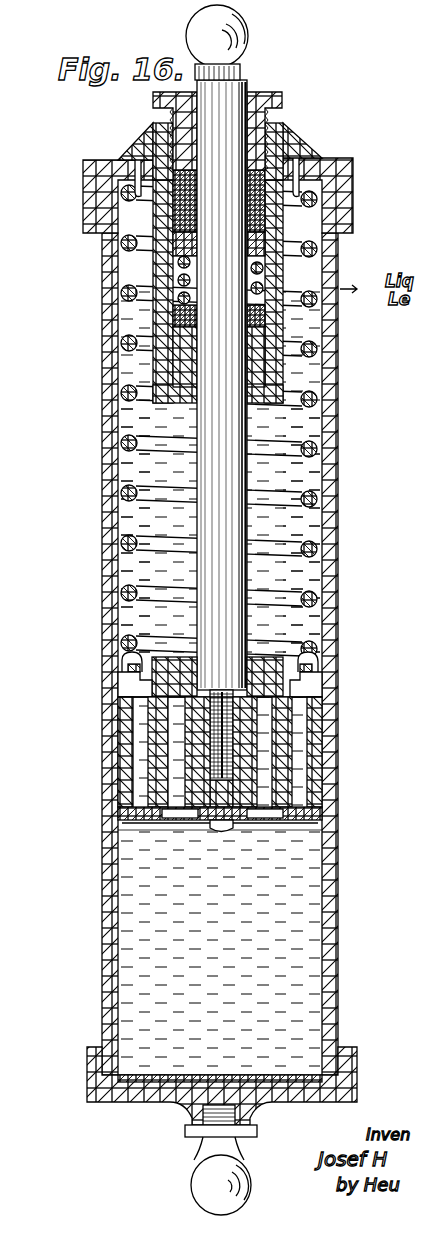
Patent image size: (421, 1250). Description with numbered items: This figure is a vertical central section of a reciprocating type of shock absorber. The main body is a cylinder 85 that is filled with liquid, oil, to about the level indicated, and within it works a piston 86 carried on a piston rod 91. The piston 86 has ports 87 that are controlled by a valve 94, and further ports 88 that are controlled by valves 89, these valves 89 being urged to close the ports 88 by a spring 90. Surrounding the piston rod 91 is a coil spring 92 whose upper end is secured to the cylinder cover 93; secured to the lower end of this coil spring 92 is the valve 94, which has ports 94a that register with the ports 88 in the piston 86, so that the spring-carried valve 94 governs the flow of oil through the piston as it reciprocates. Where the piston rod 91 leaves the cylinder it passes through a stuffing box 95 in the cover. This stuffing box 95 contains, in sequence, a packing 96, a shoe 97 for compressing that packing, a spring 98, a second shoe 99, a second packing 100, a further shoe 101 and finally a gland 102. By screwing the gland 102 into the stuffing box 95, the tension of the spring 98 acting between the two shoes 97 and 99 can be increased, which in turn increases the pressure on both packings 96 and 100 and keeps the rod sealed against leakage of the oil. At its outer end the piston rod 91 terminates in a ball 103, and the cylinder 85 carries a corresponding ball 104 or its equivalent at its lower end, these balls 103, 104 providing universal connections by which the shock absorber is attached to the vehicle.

The cylinder 85 is at (327, 935).
The piston 86 is at (318, 755).
The ports 87 is at (150, 763).
The ports 88 is at (140, 790).
The valves 89 is at (127, 815).
The spring 90 is at (273, 827).
The piston rod 91 is at (224, 585).
The coil spring 92 is at (293, 543).
The cylinder cover 93 is at (343, 194).
The valve 94 is at (120, 660).
The ports 94a is at (358, 682).
The stuffing box 95 is at (273, 272).
The packing 96 is at (260, 363).
The shoe 97 is at (262, 327).
The spring 98 is at (176, 318).
The shoe 99 is at (178, 256).
The packing 100 is at (175, 208).
The shoe 101 is at (267, 142).
The gland 102 is at (283, 100).
The ball 103 is at (250, 40).
The ball 104 is at (196, 1180).